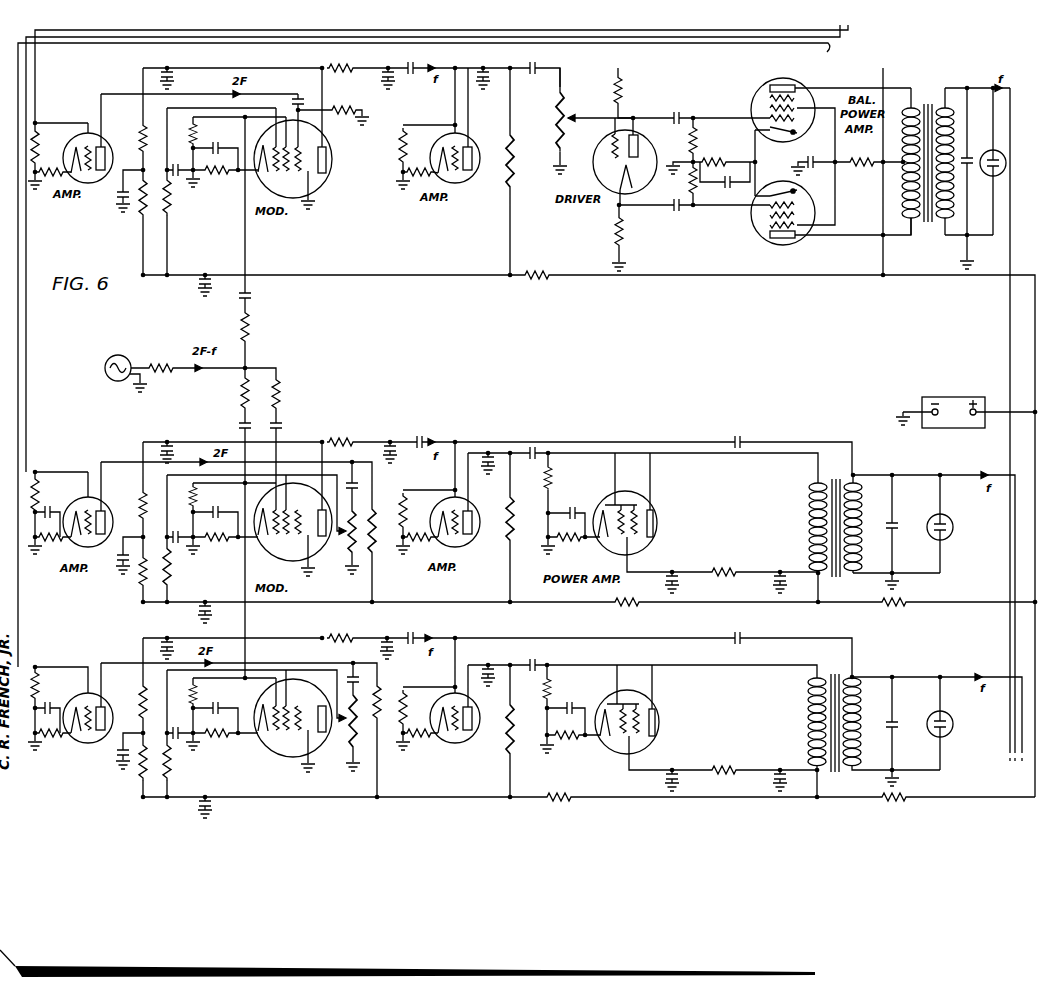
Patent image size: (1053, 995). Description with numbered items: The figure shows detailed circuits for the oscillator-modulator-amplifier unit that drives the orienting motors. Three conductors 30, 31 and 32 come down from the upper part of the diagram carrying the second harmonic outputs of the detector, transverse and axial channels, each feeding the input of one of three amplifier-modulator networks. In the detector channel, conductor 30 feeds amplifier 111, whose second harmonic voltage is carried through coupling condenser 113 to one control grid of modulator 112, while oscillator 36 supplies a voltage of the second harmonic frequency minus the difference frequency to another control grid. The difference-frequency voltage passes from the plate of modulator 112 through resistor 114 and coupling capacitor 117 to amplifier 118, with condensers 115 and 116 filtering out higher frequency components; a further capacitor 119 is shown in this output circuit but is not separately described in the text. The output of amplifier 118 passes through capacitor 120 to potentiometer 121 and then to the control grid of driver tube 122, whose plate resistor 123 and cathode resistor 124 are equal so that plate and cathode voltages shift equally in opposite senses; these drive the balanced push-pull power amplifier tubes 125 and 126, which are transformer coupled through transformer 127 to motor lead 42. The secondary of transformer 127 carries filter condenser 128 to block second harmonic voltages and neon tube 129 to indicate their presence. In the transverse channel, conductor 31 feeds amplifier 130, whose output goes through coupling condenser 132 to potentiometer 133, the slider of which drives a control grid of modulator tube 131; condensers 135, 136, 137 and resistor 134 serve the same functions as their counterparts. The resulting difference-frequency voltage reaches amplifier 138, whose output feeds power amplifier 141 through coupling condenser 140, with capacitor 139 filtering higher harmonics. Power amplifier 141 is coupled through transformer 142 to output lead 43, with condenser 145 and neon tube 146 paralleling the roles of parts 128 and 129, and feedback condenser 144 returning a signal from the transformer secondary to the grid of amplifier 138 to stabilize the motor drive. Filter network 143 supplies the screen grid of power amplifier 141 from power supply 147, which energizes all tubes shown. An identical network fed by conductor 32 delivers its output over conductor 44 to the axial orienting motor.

The conductor 30 is at (35, 94).
The conductor 31 is at (36, 446).
The conductor 32 is at (30, 619).
The oscillator 36 is at (120, 364).
The motor lead 42 is at (1008, 708).
The output lead 43 is at (1013, 724).
The conductor 44 is at (1020, 740).
The amplifier 111 is at (85, 133).
The modulator 112 is at (329, 183).
The coupling condenser 113 is at (298, 97).
The resistor 114 is at (346, 66).
The condenser 115 is at (384, 75).
The condenser 116 is at (174, 82).
The coupling capacitor 117 is at (413, 63).
The amplifier 118 is at (470, 184).
The bypass capacitor 119 is at (487, 75).
The capacitor 120 is at (535, 67).
The potentiometer 121 is at (564, 94).
The driver tube 122 is at (639, 188).
The plate resistor 123 is at (626, 94).
The cathode resistor 124 is at (625, 234).
The balanced power amplifier tube 125 is at (752, 96).
The balanced power amplifier tube 126 is at (752, 229).
The transformer 127 is at (927, 100).
The filter condenser 128 is at (972, 158).
The neon tube 129 is at (1006, 154).
The amplifier 130 is at (82, 476).
The modulator tube 131 is at (318, 558).
The coupling condenser 132 is at (353, 480).
The potentiometer 133 is at (348, 558).
The resistor 134 is at (338, 438).
The condenser 135 is at (392, 440).
The condenser 136 is at (170, 444).
The condenser 137 is at (420, 438).
The amplifier 138 is at (470, 548).
The capacitor 139 is at (490, 452).
The coupling condenser 140 is at (535, 450).
The power amplifier 141 is at (657, 515).
The transformer 142 is at (853, 475).
The filter network 143 is at (737, 597).
The feedback condenser 144 is at (742, 442).
The condenser 145 is at (892, 522).
The neon tube 146 is at (948, 524).
The power supply 147 is at (966, 398).